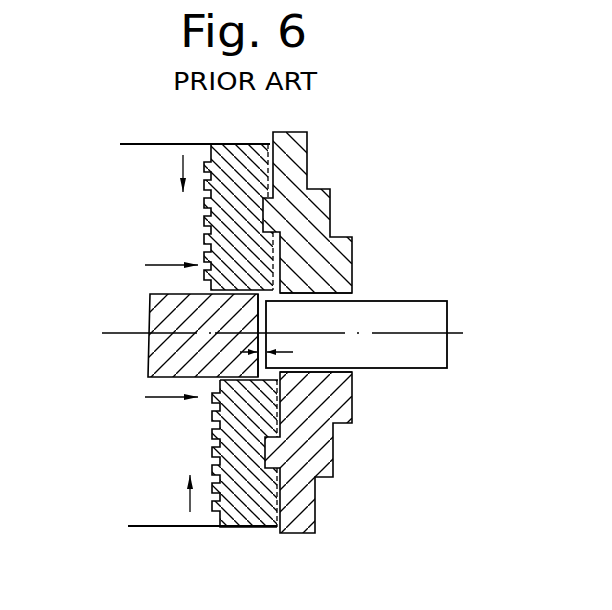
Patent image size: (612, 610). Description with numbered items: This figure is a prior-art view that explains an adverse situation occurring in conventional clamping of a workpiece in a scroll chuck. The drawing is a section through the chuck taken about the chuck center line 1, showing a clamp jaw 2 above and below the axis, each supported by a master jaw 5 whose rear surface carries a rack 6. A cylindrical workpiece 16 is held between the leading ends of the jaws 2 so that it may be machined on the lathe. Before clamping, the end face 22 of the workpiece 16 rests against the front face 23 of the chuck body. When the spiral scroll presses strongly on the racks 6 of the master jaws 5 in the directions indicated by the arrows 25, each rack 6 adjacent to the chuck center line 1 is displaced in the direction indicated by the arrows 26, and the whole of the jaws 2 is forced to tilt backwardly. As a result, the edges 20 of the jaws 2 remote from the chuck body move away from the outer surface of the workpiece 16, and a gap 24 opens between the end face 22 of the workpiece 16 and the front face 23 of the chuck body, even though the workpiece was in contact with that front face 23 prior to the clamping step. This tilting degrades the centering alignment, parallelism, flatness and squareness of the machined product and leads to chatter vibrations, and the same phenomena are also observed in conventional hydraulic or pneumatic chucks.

The center line 1 is at (102, 335).
The clamp jaw 2 is at (323, 212).
The master jaw 5 is at (237, 158).
The rack 6 is at (210, 221).
The workpiece 16 is at (449, 318).
The edge of jaw 20 is at (343, 293).
The end face of workpiece 22 is at (258, 315).
The front face of chuck body 23 is at (258, 372).
The gap 24 is at (264, 348).
The arrow 25 is at (178, 172).
The arrow 26 is at (160, 262).